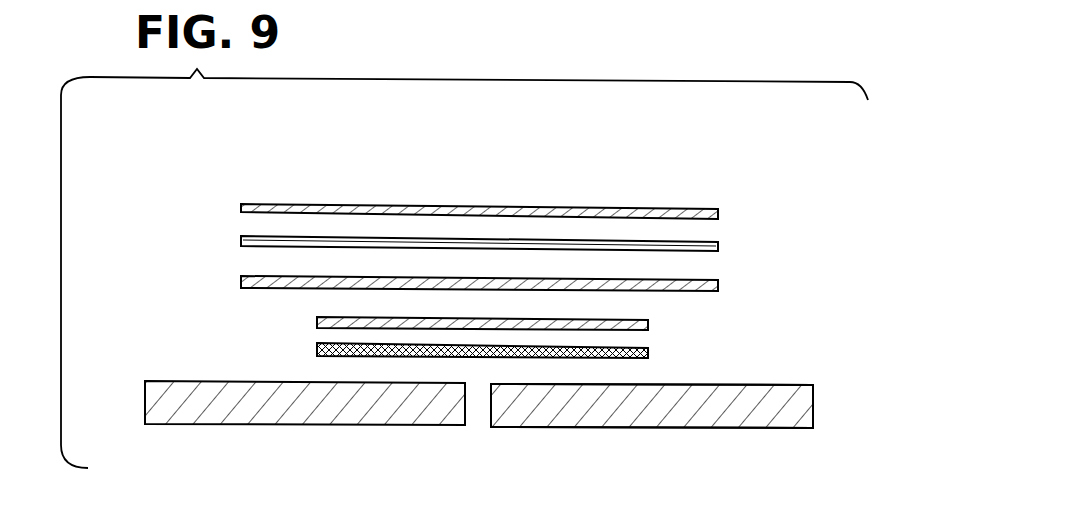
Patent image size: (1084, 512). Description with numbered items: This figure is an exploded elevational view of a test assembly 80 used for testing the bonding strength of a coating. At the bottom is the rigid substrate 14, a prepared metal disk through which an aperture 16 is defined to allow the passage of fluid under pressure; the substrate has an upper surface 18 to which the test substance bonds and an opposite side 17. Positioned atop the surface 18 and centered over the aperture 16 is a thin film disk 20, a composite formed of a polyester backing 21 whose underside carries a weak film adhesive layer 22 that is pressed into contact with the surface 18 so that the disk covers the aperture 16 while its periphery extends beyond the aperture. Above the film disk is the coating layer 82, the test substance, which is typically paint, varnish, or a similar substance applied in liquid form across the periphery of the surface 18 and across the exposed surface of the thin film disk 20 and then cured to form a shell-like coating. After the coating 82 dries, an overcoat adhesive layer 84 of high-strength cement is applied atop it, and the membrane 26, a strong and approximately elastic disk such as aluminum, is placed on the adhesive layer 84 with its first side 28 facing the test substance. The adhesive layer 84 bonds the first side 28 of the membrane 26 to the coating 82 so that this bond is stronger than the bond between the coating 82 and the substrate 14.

The rigid substrate 14 is at (535, 398).
The aperture 16 is at (491, 405).
The side of substrate opposite the test substance 17 is at (725, 427).
The upper surface of the substrate 18 is at (762, 384).
The thin film disk 20 is at (458, 336).
The polyester backing 21 is at (317, 322).
The weak film adhesive layer 22 is at (317, 348).
The membrane 26 is at (685, 203).
The first side of the membrane 28 is at (248, 216).
The test assembly 80 is at (504, 207).
The coating layer 82 is at (722, 287).
The overcoat adhesive layer 84 is at (722, 247).